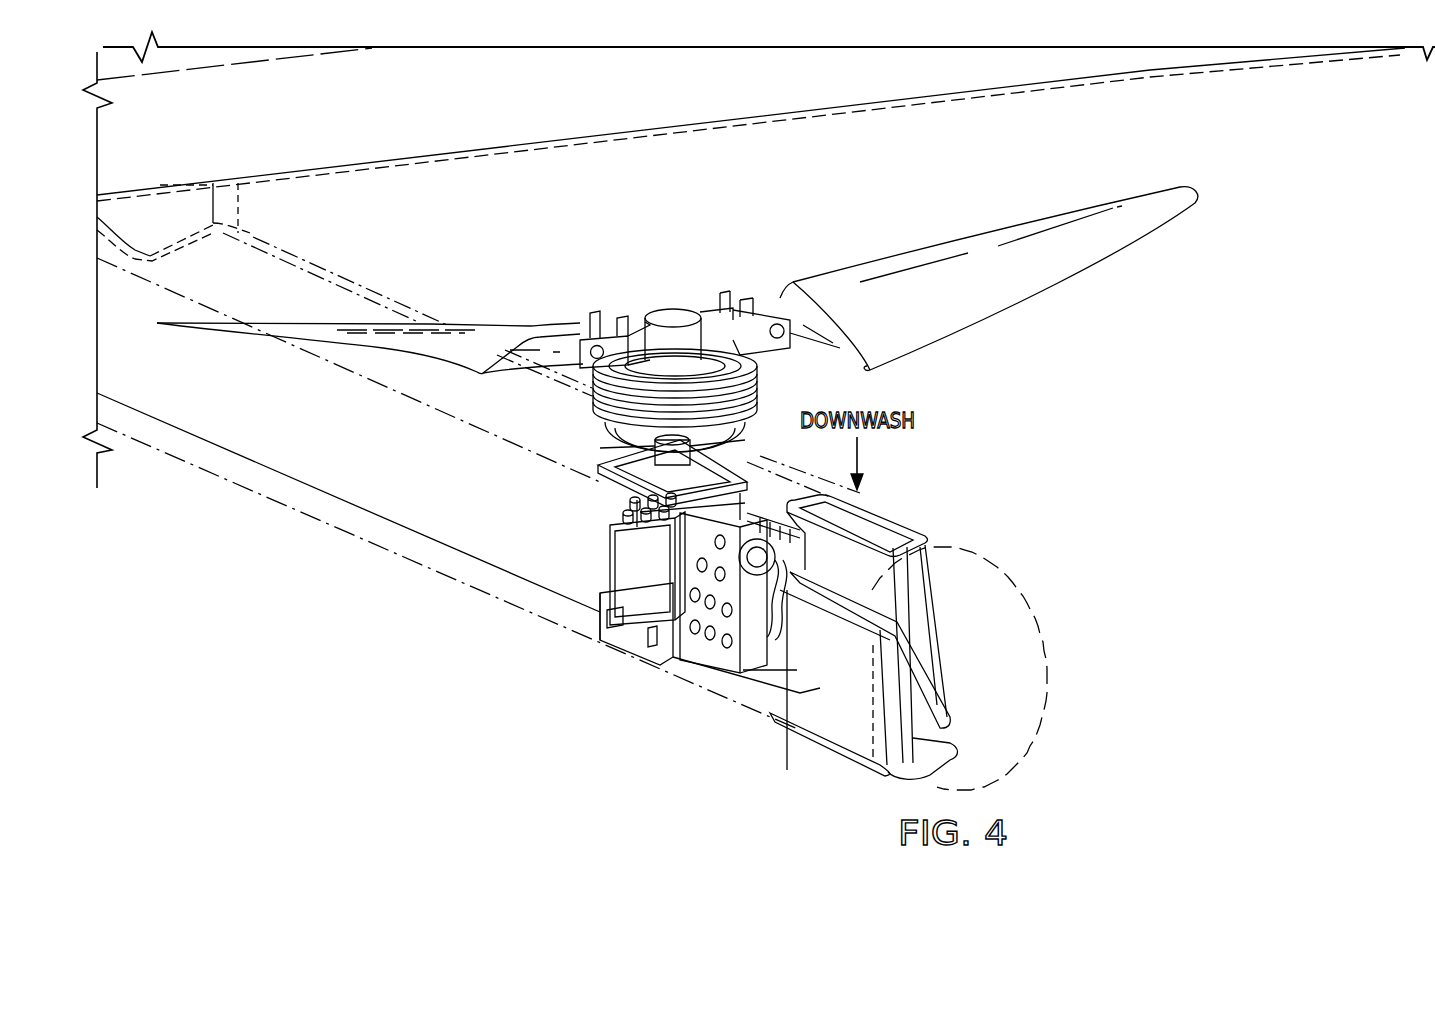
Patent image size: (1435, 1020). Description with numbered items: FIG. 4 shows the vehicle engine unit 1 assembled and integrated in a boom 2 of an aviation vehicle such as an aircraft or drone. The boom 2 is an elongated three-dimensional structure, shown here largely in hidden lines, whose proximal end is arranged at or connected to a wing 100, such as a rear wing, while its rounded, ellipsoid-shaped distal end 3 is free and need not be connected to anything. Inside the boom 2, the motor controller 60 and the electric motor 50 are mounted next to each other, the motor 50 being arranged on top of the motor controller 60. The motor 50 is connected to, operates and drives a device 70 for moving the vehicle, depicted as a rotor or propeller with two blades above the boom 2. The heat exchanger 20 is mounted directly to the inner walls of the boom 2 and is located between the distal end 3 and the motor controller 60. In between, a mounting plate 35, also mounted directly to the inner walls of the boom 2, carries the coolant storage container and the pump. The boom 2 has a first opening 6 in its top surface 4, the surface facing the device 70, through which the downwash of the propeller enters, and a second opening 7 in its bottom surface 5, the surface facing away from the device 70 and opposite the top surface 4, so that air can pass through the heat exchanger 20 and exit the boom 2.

The vehicle engine unit 1 is at (527, 708).
The boom 2 is at (268, 247).
The distal end 3 is at (1047, 710).
The top surface 4 is at (372, 291).
The bottom surface 5 is at (362, 540).
The first opening 6 is at (898, 508).
The second opening 7 is at (832, 760).
The heat exchanger 20 is at (938, 625).
The mounting plate 35 is at (705, 652).
The electric motor 50 is at (757, 386).
The motor controller 60 is at (612, 563).
The device for moving the vehicle 70 is at (982, 246).
The wing 100 is at (625, 140).